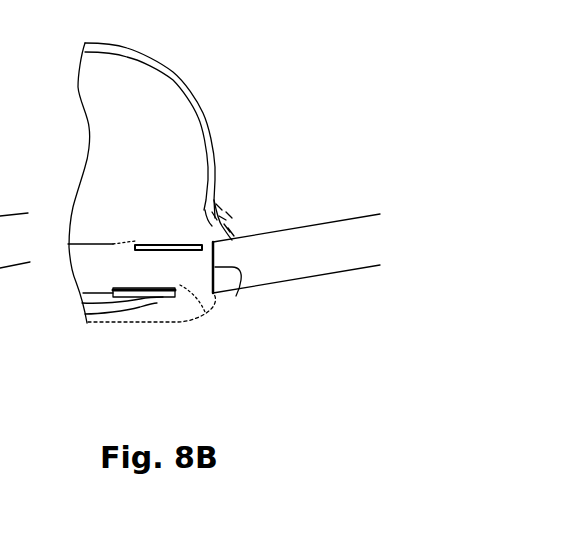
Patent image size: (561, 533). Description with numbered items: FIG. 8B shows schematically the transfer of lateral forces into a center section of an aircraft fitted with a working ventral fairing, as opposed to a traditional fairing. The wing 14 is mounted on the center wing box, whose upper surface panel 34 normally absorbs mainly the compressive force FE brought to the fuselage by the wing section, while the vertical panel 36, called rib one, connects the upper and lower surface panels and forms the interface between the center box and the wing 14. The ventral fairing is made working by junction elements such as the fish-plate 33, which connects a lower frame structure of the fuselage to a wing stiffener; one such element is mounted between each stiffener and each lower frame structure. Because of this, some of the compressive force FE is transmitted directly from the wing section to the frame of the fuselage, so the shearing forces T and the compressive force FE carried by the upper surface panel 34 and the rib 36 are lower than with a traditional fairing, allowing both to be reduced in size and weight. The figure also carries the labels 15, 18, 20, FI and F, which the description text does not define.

The flap 15 is at (168, 72).
The upper surface panel 34 is at (83, 243).
The compressive force FE is at (163, 243).
The receiving space 18 is at (142, 265).
The lower flange element FI is at (163, 298).
The lower body portion 20 is at (135, 323).
The wing 14 is at (296, 253).
The vertical panel 36 is at (236, 296).
The fish-plate 33 is at (215, 202).
The shearing forces T is at (199, 216).
The fold F is at (237, 237).